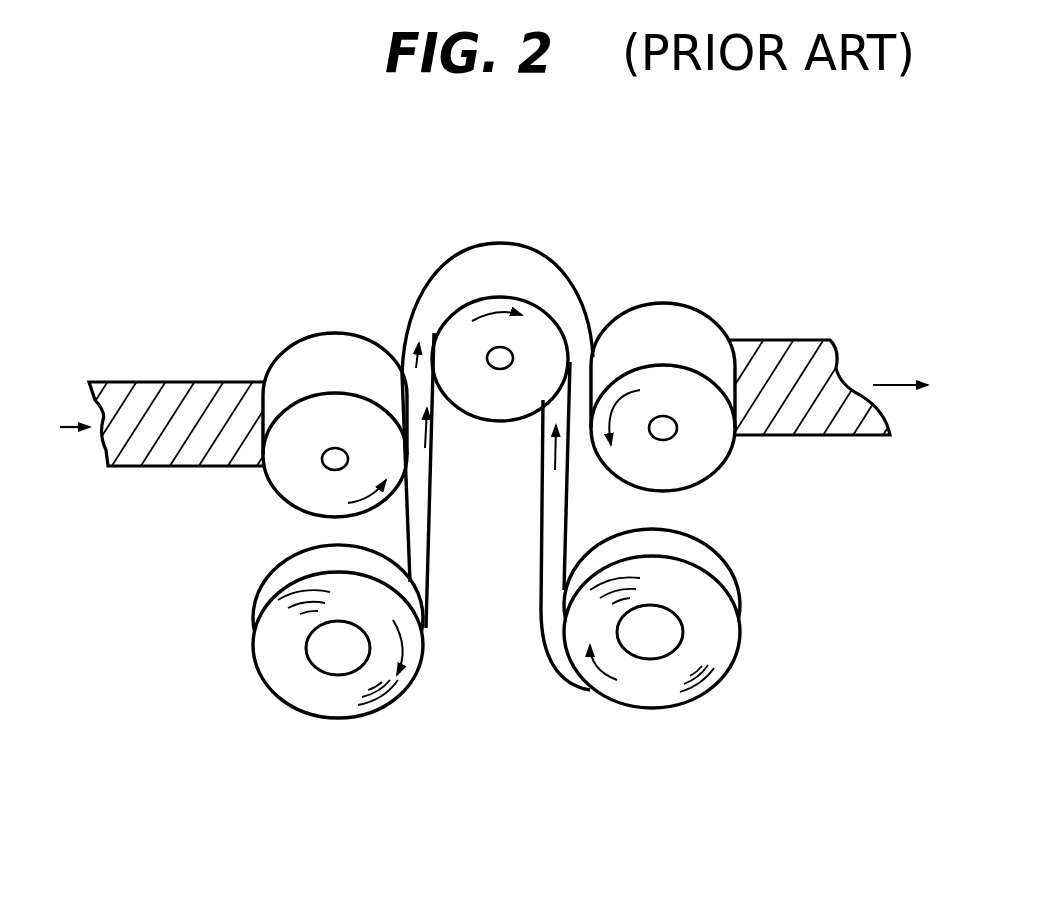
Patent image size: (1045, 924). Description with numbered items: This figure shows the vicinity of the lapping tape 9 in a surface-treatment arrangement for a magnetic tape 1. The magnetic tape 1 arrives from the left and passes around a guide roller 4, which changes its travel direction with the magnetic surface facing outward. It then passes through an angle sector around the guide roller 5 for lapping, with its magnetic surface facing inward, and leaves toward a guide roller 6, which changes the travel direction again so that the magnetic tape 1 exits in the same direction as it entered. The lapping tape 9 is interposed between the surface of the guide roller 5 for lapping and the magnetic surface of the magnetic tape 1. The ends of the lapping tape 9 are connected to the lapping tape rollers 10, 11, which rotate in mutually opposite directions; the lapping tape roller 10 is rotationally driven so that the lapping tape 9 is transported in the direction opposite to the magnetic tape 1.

The magnetic tape 1 is at (185, 407).
The guide roller 4 is at (315, 333).
The guide roller for lapping 5 is at (542, 323).
The guide roller 6 is at (697, 325).
The lapping tape 9 is at (430, 557).
The lapping tape roller 10 is at (295, 693).
The lapping tape roller 11 is at (715, 622).